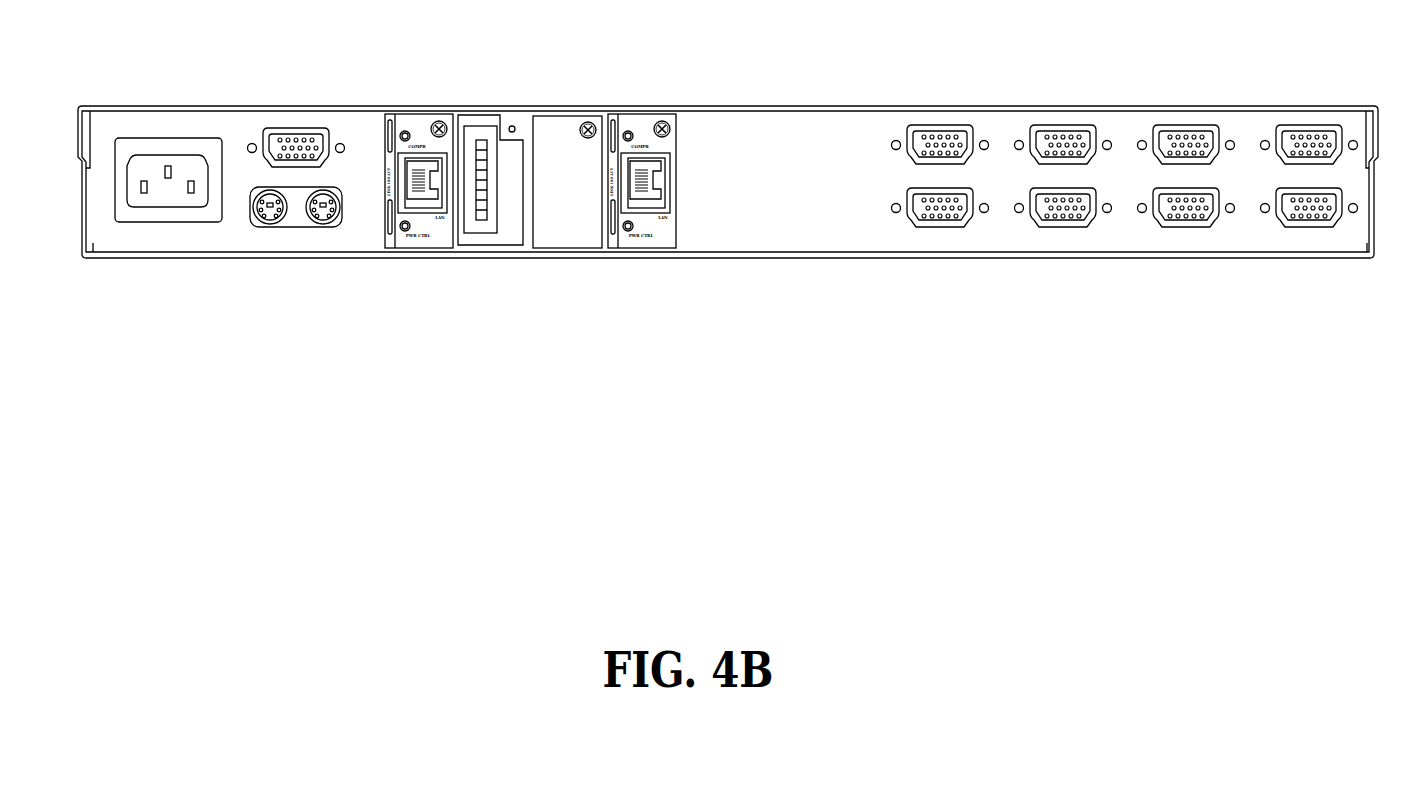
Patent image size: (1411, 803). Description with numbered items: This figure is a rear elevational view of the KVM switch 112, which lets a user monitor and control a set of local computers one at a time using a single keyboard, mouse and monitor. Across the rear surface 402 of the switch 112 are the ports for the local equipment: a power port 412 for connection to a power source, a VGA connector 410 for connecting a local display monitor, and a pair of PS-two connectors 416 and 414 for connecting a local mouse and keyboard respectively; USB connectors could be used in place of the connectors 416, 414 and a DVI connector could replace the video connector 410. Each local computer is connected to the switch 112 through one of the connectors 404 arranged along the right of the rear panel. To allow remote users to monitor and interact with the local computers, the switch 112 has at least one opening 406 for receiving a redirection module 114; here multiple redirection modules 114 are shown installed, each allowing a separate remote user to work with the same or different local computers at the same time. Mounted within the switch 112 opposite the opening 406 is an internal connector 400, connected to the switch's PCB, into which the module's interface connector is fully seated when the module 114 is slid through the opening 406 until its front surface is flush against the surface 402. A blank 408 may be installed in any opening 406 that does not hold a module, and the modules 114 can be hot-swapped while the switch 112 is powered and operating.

The KVM switch 112 is at (790, 253).
The surface 402 is at (790, 155).
The power port 412 is at (170, 172).
The VGA connector 410 is at (298, 140).
The PS/2 connector 416 is at (270, 222).
The PS/2 connector 414 is at (323, 222).
The redirection module 114 is at (418, 130).
The opening 406 is at (515, 156).
The internal connector 400 is at (480, 225).
The blank 408 is at (570, 225).
The connector 404 is at (1070, 137).